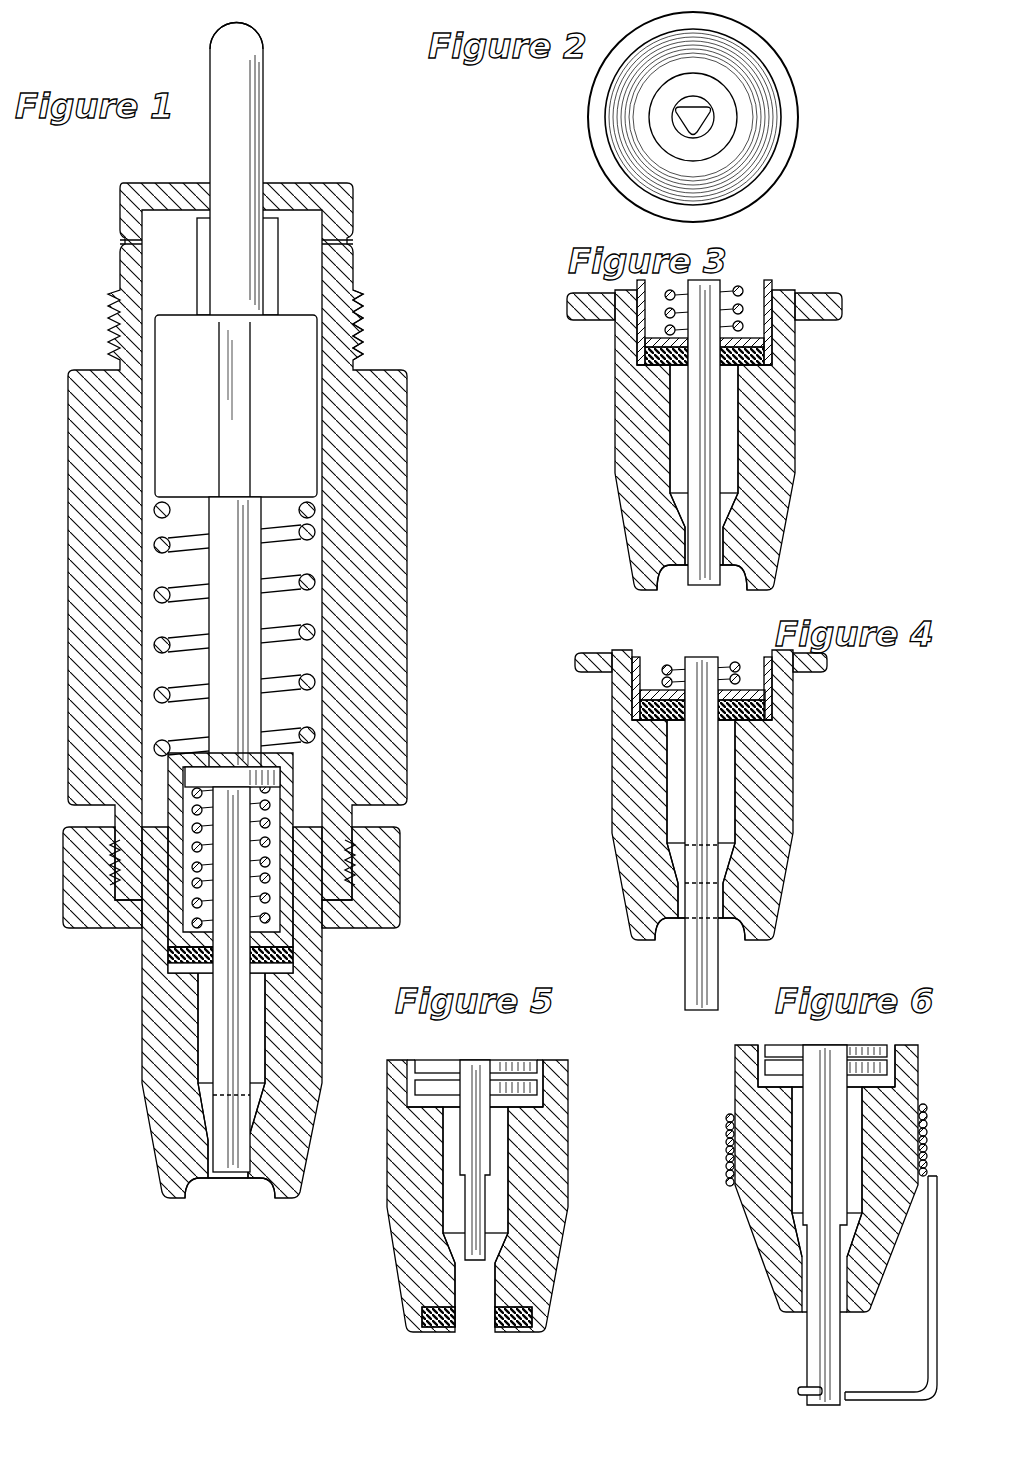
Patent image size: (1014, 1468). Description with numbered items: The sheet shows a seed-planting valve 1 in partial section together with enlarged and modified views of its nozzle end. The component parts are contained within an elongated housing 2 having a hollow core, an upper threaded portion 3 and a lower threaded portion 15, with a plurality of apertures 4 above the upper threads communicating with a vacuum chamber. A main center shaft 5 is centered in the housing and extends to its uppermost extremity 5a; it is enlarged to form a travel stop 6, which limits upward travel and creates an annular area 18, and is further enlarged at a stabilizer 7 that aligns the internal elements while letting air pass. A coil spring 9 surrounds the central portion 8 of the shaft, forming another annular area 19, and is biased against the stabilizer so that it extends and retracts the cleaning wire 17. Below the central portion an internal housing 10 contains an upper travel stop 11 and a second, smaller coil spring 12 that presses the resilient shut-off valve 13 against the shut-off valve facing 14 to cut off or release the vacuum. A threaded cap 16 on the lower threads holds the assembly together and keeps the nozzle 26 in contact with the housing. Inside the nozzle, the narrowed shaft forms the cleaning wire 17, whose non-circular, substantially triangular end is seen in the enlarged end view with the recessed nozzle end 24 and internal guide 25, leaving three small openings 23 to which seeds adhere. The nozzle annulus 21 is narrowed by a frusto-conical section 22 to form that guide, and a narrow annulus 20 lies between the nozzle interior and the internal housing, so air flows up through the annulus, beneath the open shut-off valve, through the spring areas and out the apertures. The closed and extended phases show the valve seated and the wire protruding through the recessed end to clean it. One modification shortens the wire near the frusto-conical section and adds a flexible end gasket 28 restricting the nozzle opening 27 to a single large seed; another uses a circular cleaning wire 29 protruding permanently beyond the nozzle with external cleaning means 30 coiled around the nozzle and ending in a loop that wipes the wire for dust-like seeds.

In FIG. 1, the seed-planting valve 1 is at (326, 168).
In FIG. 1, the housing 2 is at (405, 505).
In FIG. 1, the threaded portion 3 is at (360, 318).
In FIG. 1, the apertures 4 is at (120, 240).
In FIG. 1, the main center shaft 5 is at (278, 124).
In FIG. 1, the uppermost extremity of center shaft 5a is at (258, 40).
In FIG. 1, the travel stop 6 is at (278, 246).
In FIG. 1, the stabilizer 7 is at (300, 440).
In FIG. 1, the central portion of shaft 8 is at (236, 622).
In FIG. 1, the coil spring 9 is at (307, 588).
In FIG. 1, the internal housing 10 is at (176, 768).
In FIG. 3, the internal housing 10 is at (760, 326).
In FIG. 4, the internal housing 10 is at (760, 692).
In FIG. 5, the internal housing 10 is at (445, 1062).
In FIG. 6, the internal housing 10 is at (792, 1046).
In FIG. 1, the upper travel stop 11 is at (285, 776).
In FIG. 1, the second coil spring 12 is at (268, 822).
In FIG. 3, the second coil spring 12 is at (668, 318).
In FIG. 4, the second coil spring 12 is at (668, 662).
In FIG. 1, the shut-off valve 13 is at (293, 956).
In FIG. 3, the shut-off valve 13 is at (650, 360).
In FIG. 4, the shut-off valve 13 is at (645, 712).
In FIG. 5, the shut-off valve 13 is at (537, 1092).
In FIG. 6, the shut-off valve 13 is at (765, 1068).
In FIG. 1, the shut-off valve facing 14 is at (168, 976).
In FIG. 3, the shut-off valve facing 14 is at (655, 372).
In FIG. 4, the shut-off valve facing 14 is at (745, 728).
In FIG. 5, the shut-off valve facing 14 is at (520, 1108).
In FIG. 6, the shut-off valve facing 14 is at (778, 1088).
In FIG. 1, the threaded portion 15 is at (352, 873).
In FIG. 1, the threaded cap 16 is at (400, 896).
In FIG. 2, the threaded cap 16 is at (778, 56).
In FIG. 3, the threaded cap 16 is at (830, 320).
In FIG. 4, the threaded cap 16 is at (585, 672).
In FIG. 1, the cleaning wire 17 is at (228, 1036).
In FIG. 2, the cleaning wire 17 is at (712, 133).
In FIG. 3, the cleaning wire 17 is at (705, 546).
In FIG. 4, the cleaning wire 17 is at (690, 826).
In FIG. 5, the cleaning wire 17 is at (462, 1208).
In FIG. 1, the annular area 18 is at (312, 306).
In FIG. 1, the annular area 19 is at (299, 649).
In FIG. 1, the annulus 20 is at (168, 948).
In FIG. 3, the annulus 20 is at (768, 288).
In FIG. 4, the annulus 20 is at (636, 656).
In FIG. 5, the annulus 20 is at (540, 1060).
In FIG. 6, the annulus 20 is at (892, 1048).
In FIG. 1, the nozzle annulus 21 is at (253, 1032).
In FIG. 3, the nozzle annulus 21 is at (728, 422).
In FIG. 4, the nozzle annulus 21 is at (725, 830).
In FIG. 5, the nozzle annulus 21 is at (500, 1160).
In FIG. 6, the nozzle annulus 21 is at (850, 1190).
In FIG. 1, the frusto-conical section 22 is at (260, 1120).
In FIG. 3, the frusto-conical section 22 is at (735, 506).
In FIG. 4, the frusto-conical section 22 is at (672, 868).
In FIG. 5, the frusto-conical section 22 is at (450, 1258).
In FIG. 6, the frusto-conical section 22 is at (855, 1240).
In FIG. 1, the openings 23 is at (200, 1185).
In FIG. 2, the openings 23 is at (680, 125).
In FIG. 3, the openings 23 is at (690, 576).
In FIG. 4, the openings 23 is at (680, 930).
In FIG. 6, the openings 23 is at (800, 1310).
In FIG. 1, the recessed nozzle end 24 is at (248, 1193).
In FIG. 2, the recessed nozzle end 24 is at (700, 150).
In FIG. 3, the recessed nozzle end 24 is at (730, 585).
In FIG. 4, the recessed nozzle end 24 is at (730, 935).
In FIG. 1, the internal guide 25 is at (208, 1152).
In FIG. 2, the internal guide 25 is at (673, 113).
In FIG. 3, the internal guide 25 is at (725, 558).
In FIG. 4, the internal guide 25 is at (725, 896).
In FIG. 1, the nozzle 26 is at (142, 1045).
In FIG. 2, the nozzle 26 is at (787, 130).
In FIG. 3, the nozzle 26 is at (797, 440).
In FIG. 4, the nozzle 26 is at (795, 798).
In FIG. 5, the nozzle 26 is at (388, 1164).
In FIG. 6, the nozzle 26 is at (735, 1086).
In FIG. 5, the nozzle opening 27 is at (490, 1282).
In FIG. 5, the end gasket 28 is at (440, 1327).
In FIG. 6, the cleaning wire 29 is at (806, 1358).
In FIG. 6, the external cleaning means 30 is at (728, 1134).